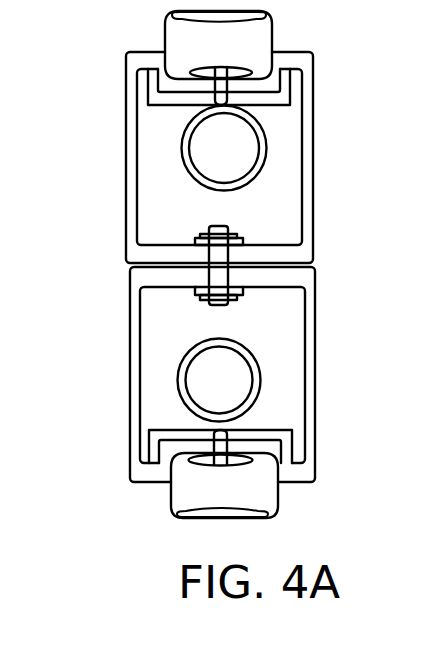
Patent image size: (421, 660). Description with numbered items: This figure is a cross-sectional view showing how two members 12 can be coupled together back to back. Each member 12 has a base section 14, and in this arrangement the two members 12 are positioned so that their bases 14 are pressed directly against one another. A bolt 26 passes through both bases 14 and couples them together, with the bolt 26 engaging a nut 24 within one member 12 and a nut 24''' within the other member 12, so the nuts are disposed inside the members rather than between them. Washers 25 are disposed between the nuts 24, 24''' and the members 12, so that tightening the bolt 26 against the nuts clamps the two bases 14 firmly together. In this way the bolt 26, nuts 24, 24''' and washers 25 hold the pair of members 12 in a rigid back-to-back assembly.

The member 12 is at (110, 158).
The base section 14 is at (290, 255).
The nut 24 is at (209, 218).
The nut 24''' is at (192, 319).
The washer 25 is at (244, 239).
The bolt 26 is at (223, 226).